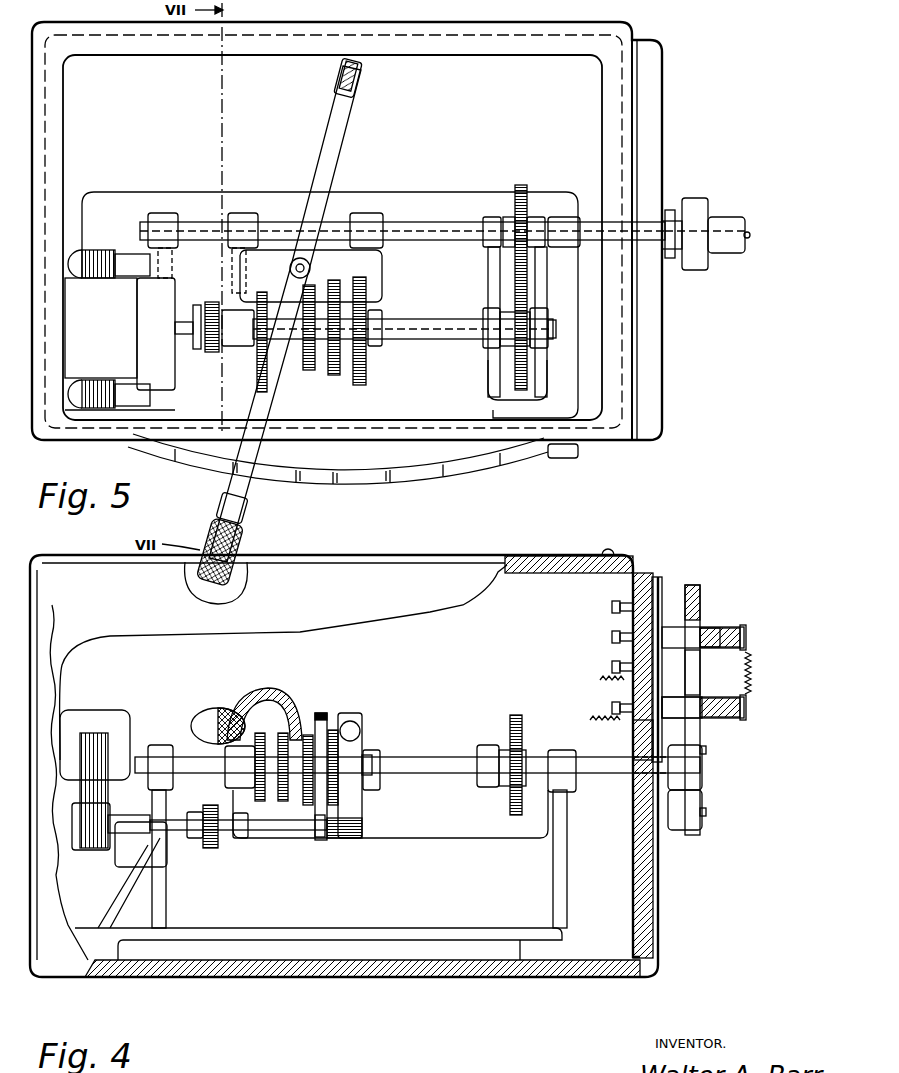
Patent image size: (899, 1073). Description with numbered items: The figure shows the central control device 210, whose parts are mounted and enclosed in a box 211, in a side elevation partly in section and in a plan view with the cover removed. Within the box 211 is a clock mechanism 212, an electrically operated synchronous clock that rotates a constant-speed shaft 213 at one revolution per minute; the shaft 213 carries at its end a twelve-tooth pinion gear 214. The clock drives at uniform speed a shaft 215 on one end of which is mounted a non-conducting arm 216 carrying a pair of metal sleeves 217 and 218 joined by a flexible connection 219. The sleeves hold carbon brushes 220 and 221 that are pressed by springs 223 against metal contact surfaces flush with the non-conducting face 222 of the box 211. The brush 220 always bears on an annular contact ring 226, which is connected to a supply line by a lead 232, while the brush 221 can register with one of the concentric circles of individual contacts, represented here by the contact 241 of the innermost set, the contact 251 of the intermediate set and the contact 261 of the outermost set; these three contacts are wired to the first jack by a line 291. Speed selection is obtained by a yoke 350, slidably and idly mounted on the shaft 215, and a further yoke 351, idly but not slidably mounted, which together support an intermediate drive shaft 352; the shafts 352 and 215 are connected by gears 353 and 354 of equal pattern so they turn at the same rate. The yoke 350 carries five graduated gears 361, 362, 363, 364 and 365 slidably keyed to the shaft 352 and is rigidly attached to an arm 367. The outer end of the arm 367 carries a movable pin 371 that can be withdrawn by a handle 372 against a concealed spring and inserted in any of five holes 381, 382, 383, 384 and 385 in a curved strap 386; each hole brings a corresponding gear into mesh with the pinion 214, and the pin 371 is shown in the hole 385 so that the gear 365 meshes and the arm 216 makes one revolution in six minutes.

In FIG. 5, the control device 210 is at (466, 130).
In FIG. 4, the control device 210 is at (483, 652).
In FIG. 5, the box 211 is at (63, 136).
In FIG. 4, the box 211 is at (413, 975).
In FIG. 5, the clock mechanism 212 is at (160, 360).
In FIG. 4, the clock mechanism 212 is at (118, 850).
In FIG. 5, the constant-speed shaft 213 is at (182, 346).
In FIG. 4, the constant-speed shaft 213 is at (286, 830).
In FIG. 4, the pinion gear 214 is at (350, 840).
In FIG. 5, the shaft 215 is at (188, 222).
In FIG. 4, the shaft 215 is at (186, 760).
In FIG. 5, the arm 216 is at (695, 268).
In FIG. 4, the arm 216 is at (694, 768).
In FIG. 4, the metal sleeve 217 is at (733, 718).
In FIG. 4, the metal sleeve 218 is at (732, 650).
In FIG. 4, the flexible connection 219 is at (748, 672).
In FIG. 4, the carbon brush 220 is at (698, 790).
In FIG. 4, the carbon brush 221 is at (667, 630).
In FIG. 4, the face 222 is at (648, 580).
In FIG. 4, the springs 223 is at (720, 652).
In FIG. 4, the annular contact ring 226 is at (642, 728).
In FIG. 4, the lead 232 is at (600, 717).
In FIG. 4, the contact 241 is at (632, 676).
In FIG. 4, the contact 251 is at (686, 655).
In FIG. 4, the contact 261 is at (658, 600).
In FIG. 4, the line 291 is at (612, 658).
In FIG. 5, the yoke 350 is at (375, 256).
In FIG. 4, the yoke 350 is at (233, 773).
In FIG. 5, the yoke 351 is at (490, 291).
In FIG. 4, the yoke 351 is at (495, 772).
In FIG. 5, the intermediate drive shaft 352 is at (410, 330).
In FIG. 5, the gear 353 is at (505, 368).
In FIG. 4, the gear 353 is at (510, 730).
In FIG. 5, the gear 354 is at (527, 192).
In FIG. 5, the graduated gear 361 is at (260, 378).
In FIG. 4, the graduated gear 361 is at (258, 732).
In FIG. 5, the graduated gear 362 is at (307, 360).
In FIG. 5, the graduated gear 363 is at (334, 378).
In FIG. 4, the graduated gear 363 is at (312, 740).
In FIG. 5, the graduated gear 364 is at (358, 380).
In FIG. 4, the graduated gear 364 is at (344, 722).
In FIG. 5, the graduated gear 365 is at (368, 368).
In FIG. 4, the graduated gear 365 is at (362, 718).
In FIG. 5, the arm 367 is at (343, 145).
In FIG. 4, the arm 367 is at (278, 702).
In FIG. 5, the movable pin 371 is at (250, 512).
In FIG. 5, the handle 372 is at (213, 522).
In FIG. 4, the handle 372 is at (210, 710).
In FIG. 5, the hole 381 is at (460, 478).
In FIG. 5, the hole 382 is at (410, 482).
In FIG. 5, the hole 383 is at (355, 483).
In FIG. 5, the hole 384 is at (297, 484).
In FIG. 5, the hole 385 is at (272, 470).
In FIG. 5, the strap 386 is at (548, 455).